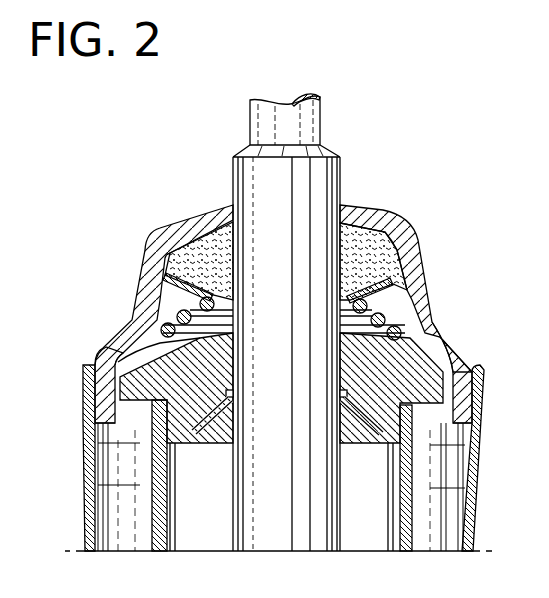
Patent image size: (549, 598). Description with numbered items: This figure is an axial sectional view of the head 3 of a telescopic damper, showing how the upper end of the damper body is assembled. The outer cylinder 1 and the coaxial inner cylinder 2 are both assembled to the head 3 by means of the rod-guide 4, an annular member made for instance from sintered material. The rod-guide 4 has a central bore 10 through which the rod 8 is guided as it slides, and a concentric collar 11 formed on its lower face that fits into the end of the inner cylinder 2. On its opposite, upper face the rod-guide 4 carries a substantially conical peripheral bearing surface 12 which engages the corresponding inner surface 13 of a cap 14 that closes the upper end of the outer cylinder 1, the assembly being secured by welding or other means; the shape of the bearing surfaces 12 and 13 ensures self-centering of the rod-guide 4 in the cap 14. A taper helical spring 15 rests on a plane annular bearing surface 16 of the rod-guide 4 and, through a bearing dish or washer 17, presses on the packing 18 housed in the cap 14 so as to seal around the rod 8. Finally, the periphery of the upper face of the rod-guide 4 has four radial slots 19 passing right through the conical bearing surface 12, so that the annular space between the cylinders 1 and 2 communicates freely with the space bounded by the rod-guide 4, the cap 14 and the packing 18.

The outer cylinder 1 is at (471, 512).
The inner cylinder 2 is at (408, 504).
The head 3 is at (130, 218).
The rod-guide 4 is at (372, 381).
The rod 8 is at (281, 193).
The central bore 10 is at (333, 337).
The collar 11 is at (387, 447).
The conical peripheral bearing surface 12 is at (143, 355).
The inner surface 13 is at (130, 350).
The cap 14 is at (176, 232).
The taper helical spring 15 is at (385, 320).
The plane annular bearing surface 16 is at (402, 332).
The bearing dish or washer 17 is at (388, 287).
The packing 18 is at (368, 257).
The radial slots 19 is at (433, 368).